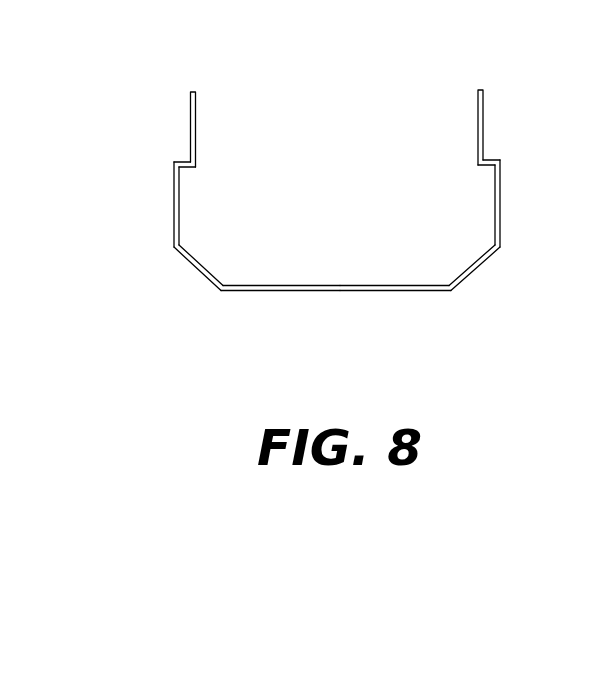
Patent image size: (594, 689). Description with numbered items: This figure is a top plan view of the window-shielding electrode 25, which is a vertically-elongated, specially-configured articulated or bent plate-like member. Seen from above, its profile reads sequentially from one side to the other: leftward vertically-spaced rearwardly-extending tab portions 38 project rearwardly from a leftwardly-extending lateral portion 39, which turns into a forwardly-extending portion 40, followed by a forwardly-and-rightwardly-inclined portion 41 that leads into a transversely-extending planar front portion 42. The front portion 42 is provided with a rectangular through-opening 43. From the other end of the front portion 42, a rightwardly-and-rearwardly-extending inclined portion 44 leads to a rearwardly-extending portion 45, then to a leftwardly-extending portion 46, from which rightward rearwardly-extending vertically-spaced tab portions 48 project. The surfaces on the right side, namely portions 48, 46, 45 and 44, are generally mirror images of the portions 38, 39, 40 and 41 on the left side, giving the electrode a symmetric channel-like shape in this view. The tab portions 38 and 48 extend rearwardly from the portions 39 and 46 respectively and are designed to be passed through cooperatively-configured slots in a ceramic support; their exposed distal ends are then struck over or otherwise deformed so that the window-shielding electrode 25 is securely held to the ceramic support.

The window-shielding electrode 25 is at (310, 78).
The rearwardly-extending tab portions 38 is at (196, 127).
The leftwardly-extending lateral portion 39 is at (187, 158).
The forwardly-extending portion 40 is at (173, 207).
The forwardly-and-rightwardly-inclined portion 41 is at (200, 272).
The transversely-extending planar front portion 42 is at (296, 291).
The rectangular through-opening 43 is at (350, 291).
The rightwardly-and-rearwardly-extending inclined portion 44 is at (473, 273).
The rearwardly-extending portion 45 is at (500, 207).
The leftwardly-extending portion 46 is at (488, 160).
The rearwardly-extending tab portions 48 is at (477, 125).